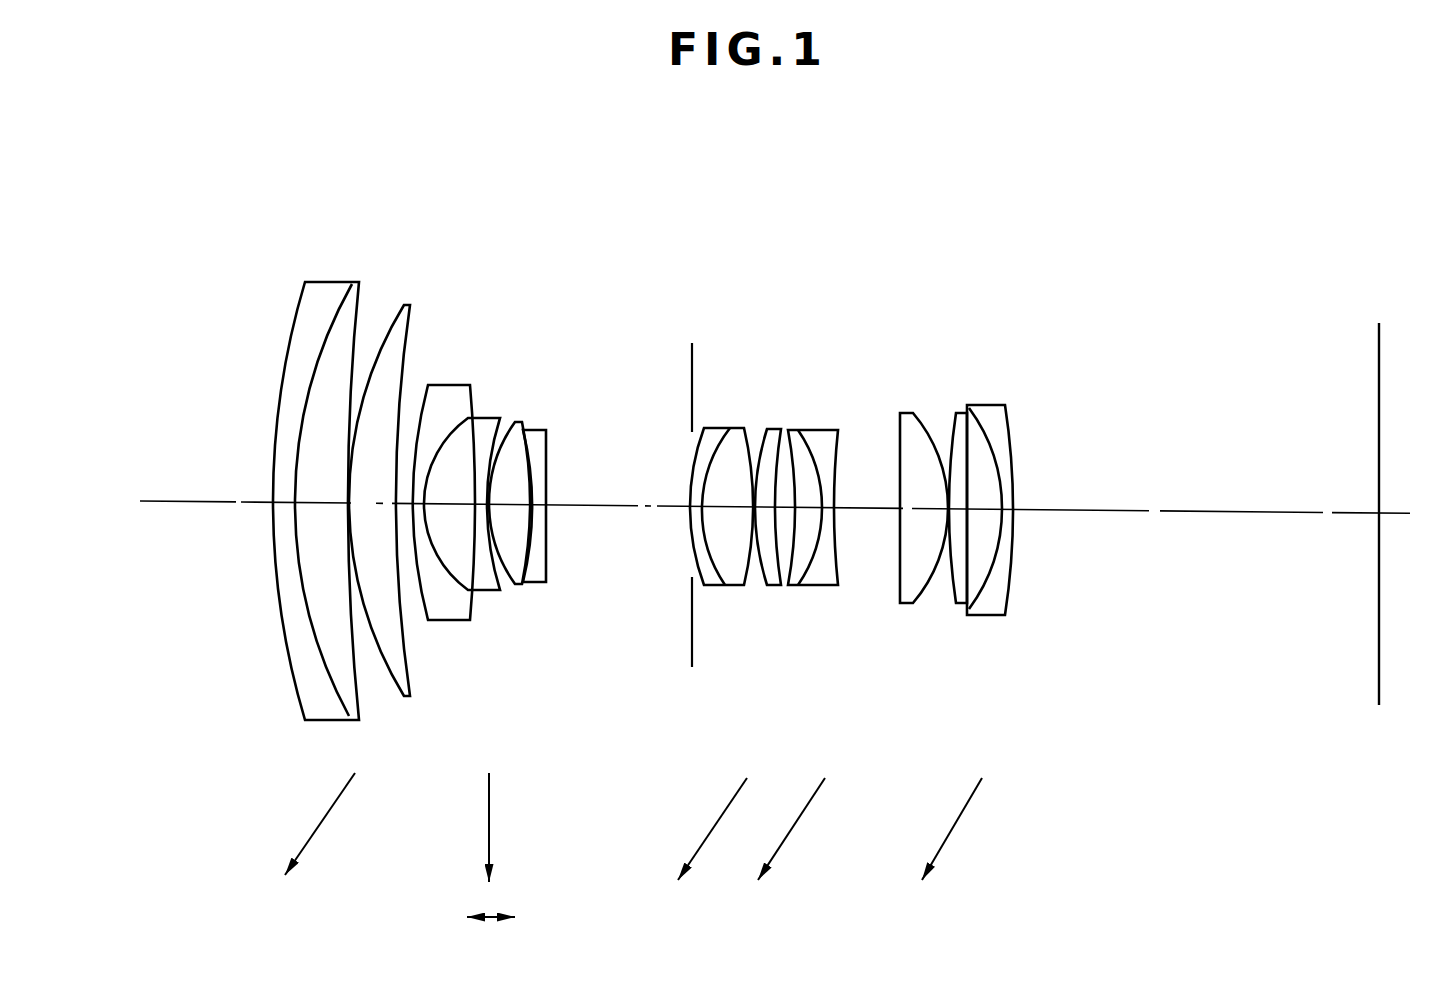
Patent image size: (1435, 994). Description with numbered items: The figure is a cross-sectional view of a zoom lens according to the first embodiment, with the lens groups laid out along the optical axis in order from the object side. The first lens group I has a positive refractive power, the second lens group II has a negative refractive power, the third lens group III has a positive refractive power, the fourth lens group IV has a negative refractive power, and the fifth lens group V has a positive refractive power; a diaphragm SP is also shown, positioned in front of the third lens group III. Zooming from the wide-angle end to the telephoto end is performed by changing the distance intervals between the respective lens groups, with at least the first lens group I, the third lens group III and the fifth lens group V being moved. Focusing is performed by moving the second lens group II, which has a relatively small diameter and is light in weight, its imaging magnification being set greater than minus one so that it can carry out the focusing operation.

The first lens group I is at (273, 264).
The second lens group II is at (430, 264).
The third lens group III is at (777, 269).
The fourth lens group IV is at (837, 270).
The fifth lens group V is at (883, 271).
The diaphragm SP is at (692, 368).